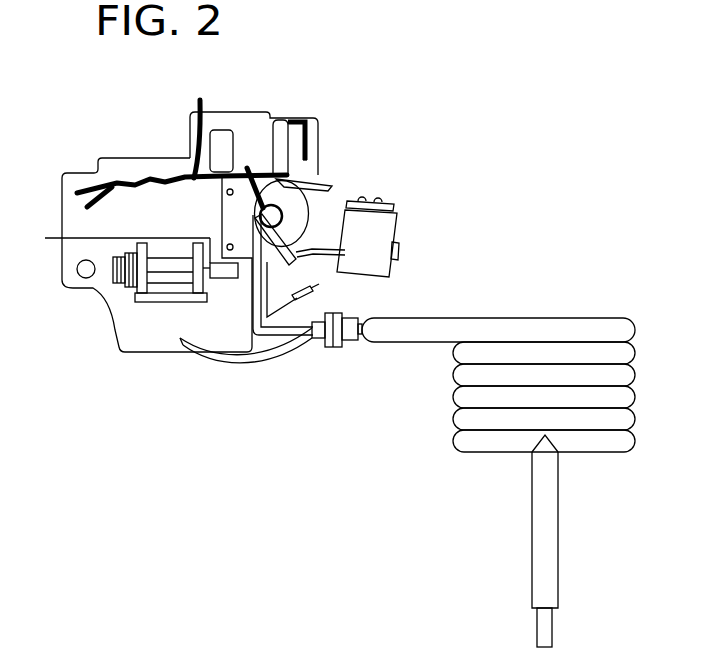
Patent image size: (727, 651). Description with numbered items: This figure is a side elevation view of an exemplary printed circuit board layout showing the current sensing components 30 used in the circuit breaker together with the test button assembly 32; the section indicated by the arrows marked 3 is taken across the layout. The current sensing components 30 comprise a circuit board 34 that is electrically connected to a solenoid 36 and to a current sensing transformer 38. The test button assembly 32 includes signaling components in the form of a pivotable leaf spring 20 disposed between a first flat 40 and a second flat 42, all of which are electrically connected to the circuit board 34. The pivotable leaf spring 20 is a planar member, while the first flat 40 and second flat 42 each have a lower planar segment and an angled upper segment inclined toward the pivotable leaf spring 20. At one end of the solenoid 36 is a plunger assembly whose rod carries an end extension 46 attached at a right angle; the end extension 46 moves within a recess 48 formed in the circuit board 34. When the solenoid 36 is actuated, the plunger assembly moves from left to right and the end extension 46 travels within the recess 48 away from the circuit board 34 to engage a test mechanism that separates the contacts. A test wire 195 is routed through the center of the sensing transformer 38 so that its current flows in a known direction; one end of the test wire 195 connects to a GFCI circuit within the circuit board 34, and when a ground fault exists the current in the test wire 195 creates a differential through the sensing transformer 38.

The pivotable leaf spring 20 is at (288, 114).
The current sensing components 30 is at (203, 208).
The test button assembly 32 is at (316, 106).
The circuit board 34 is at (120, 318).
The solenoid 36 is at (162, 275).
The current sensing transformer 38 is at (297, 218).
The first flat 40 is at (282, 117).
The second flat 42 is at (308, 140).
The end extension 46 is at (220, 275).
The recess 48 is at (238, 277).
The test wire 195 is at (258, 148).
The section line 3- 3 is at (45, 238).